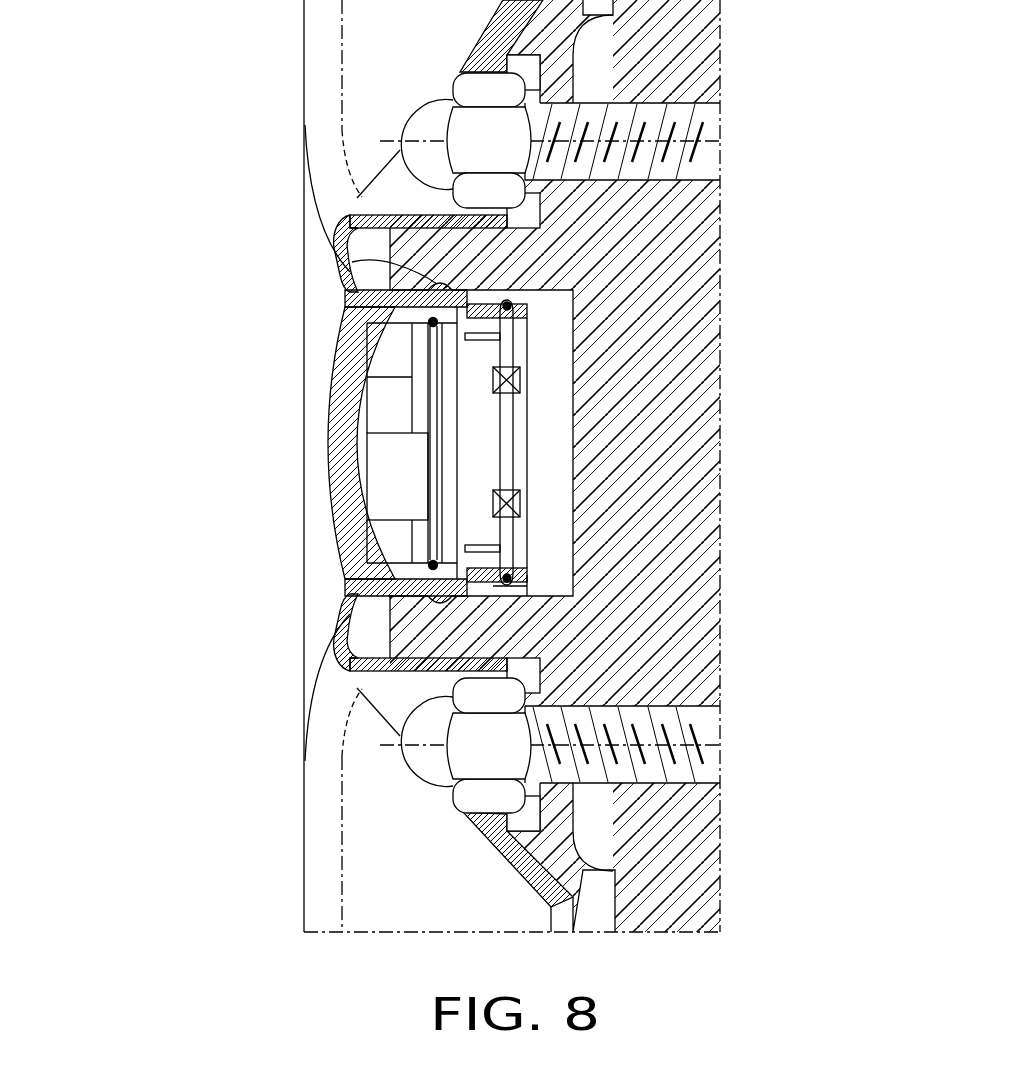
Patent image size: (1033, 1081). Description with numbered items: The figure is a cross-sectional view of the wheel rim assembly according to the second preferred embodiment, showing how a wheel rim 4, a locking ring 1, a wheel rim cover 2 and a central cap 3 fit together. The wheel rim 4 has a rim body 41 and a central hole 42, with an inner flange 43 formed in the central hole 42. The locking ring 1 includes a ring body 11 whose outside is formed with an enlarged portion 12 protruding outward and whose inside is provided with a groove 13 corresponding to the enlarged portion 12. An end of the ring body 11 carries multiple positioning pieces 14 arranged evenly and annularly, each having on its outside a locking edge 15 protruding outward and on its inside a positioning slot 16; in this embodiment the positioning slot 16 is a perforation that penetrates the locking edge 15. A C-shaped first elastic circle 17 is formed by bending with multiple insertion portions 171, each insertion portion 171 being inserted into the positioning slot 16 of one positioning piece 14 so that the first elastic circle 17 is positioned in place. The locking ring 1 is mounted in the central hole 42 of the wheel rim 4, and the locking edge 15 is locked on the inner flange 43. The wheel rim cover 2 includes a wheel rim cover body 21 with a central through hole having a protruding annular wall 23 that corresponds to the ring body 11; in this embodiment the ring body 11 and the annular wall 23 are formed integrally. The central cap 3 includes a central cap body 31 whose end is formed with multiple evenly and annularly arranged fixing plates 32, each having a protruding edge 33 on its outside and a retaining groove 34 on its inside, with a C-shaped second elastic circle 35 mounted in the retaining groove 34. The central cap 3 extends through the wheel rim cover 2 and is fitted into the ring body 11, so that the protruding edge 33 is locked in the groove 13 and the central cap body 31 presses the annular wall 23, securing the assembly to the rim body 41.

The locking ring 1 is at (438, 443).
The ring body 11 is at (395, 262).
The enlarged portion 12 is at (392, 200).
The groove 13 is at (455, 314).
The positioning pieces 14 is at (520, 535).
The locking edge 15 is at (520, 587).
The positioning slot 16 is at (507, 490).
The first elastic circle 17 is at (507, 403).
The insertion portions 171 is at (508, 580).
The wheel rim cover 2 is at (314, 466).
The wheel rim cover body 21 is at (313, 92).
The annular wall 23 is at (350, 300).
The central cap 3 is at (281, 489).
The central cap body 31 is at (338, 380).
The fixing plates 32 is at (377, 488).
The protruding edge 33 is at (400, 617).
The retaining groove 34 is at (425, 508).
The second elastic circle 35 is at (433, 462).
The wheel rim 4 is at (600, 466).
The rim body 41 is at (700, 236).
The central hole 42 is at (495, 300).
The inner flange 43 is at (505, 356).